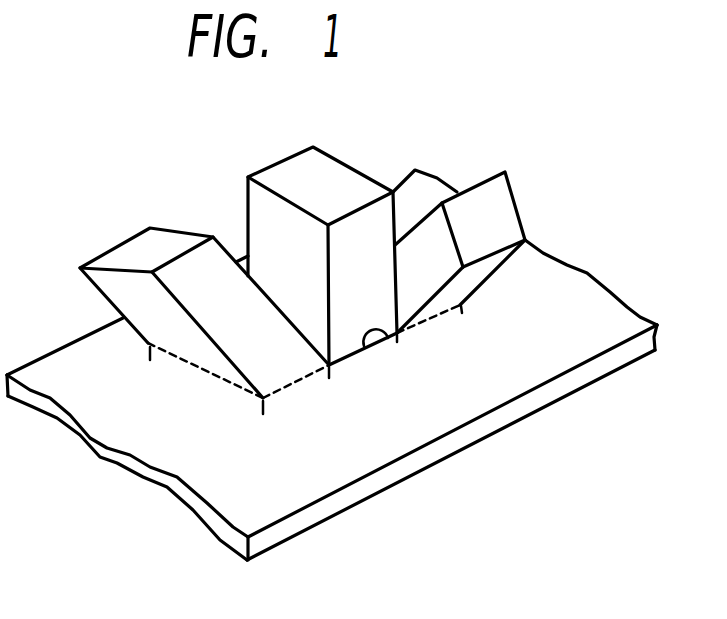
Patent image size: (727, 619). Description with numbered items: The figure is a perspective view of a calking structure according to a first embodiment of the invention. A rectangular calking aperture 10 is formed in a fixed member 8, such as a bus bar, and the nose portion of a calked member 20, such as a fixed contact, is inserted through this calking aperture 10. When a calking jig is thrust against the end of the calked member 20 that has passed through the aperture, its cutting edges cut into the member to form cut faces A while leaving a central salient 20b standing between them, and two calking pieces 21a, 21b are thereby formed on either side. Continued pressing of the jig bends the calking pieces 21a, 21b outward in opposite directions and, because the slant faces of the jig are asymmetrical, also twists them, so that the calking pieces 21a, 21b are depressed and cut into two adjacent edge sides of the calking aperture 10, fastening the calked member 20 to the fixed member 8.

The fixed member 8 is at (577, 340).
The calking aperture 10 is at (388, 338).
The calked member 20 is at (283, 227).
The salient 20b is at (346, 183).
The cut faces A is at (273, 218).
The calking piece 21a is at (135, 250).
The calking piece 21b is at (480, 182).